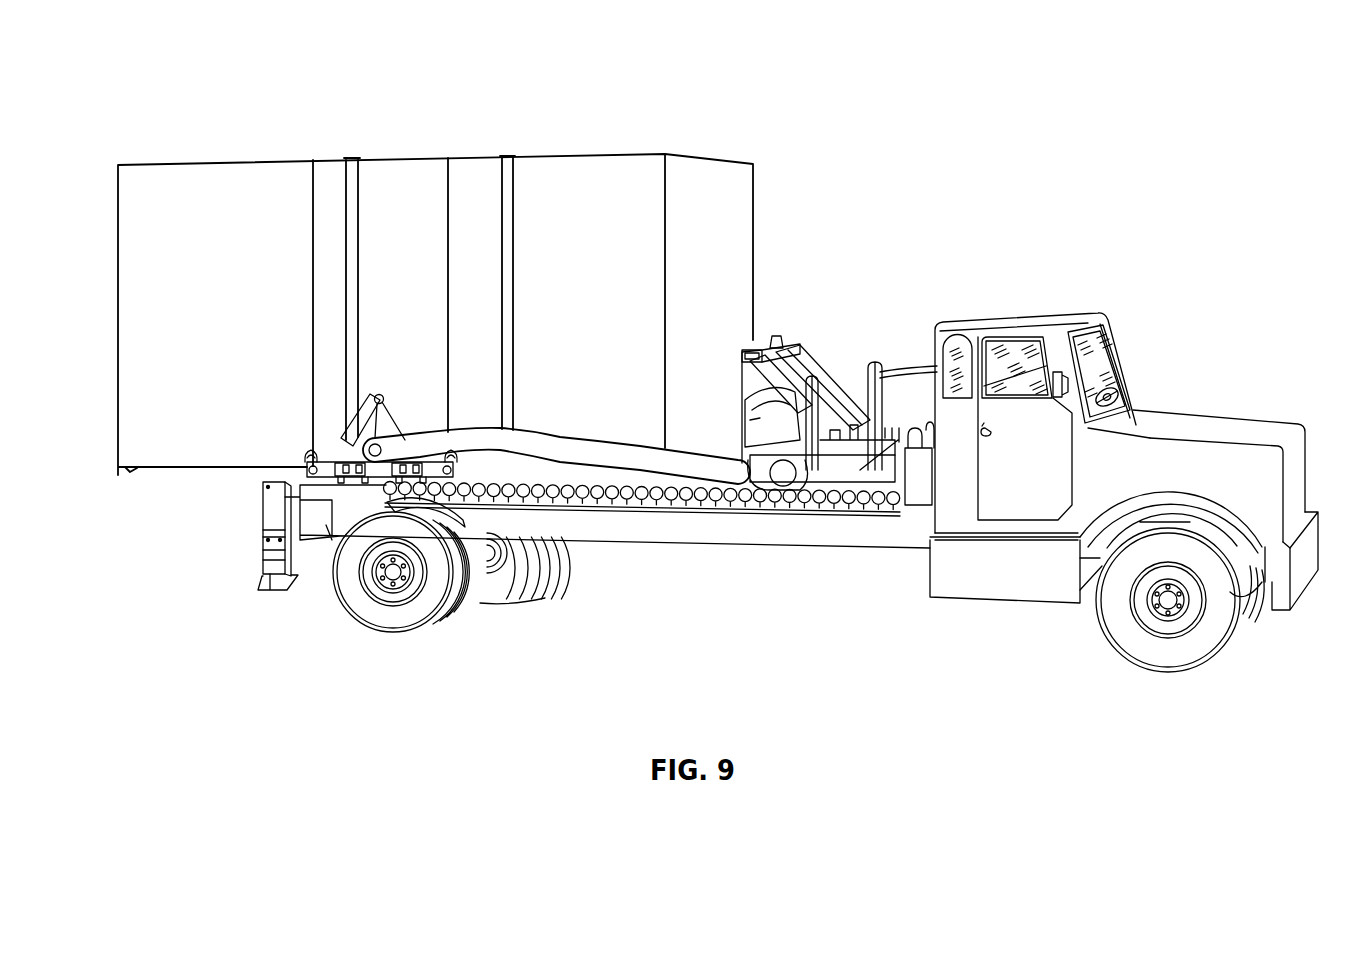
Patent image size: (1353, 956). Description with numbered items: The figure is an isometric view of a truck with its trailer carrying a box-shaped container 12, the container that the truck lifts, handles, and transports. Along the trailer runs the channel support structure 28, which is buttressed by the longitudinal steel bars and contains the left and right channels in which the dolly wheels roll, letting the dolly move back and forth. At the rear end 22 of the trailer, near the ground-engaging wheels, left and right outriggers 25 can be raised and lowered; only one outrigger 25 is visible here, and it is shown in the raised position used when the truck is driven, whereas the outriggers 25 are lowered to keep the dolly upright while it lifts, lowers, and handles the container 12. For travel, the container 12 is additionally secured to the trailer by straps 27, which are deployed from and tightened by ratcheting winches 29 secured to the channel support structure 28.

The container 12 is at (637, 138).
The rear end 22 is at (318, 516).
The outriggers 25 is at (250, 477).
The straps 27 is at (352, 158).
The channel support structure 28 is at (723, 501).
The ratcheting winches 29 is at (504, 603).